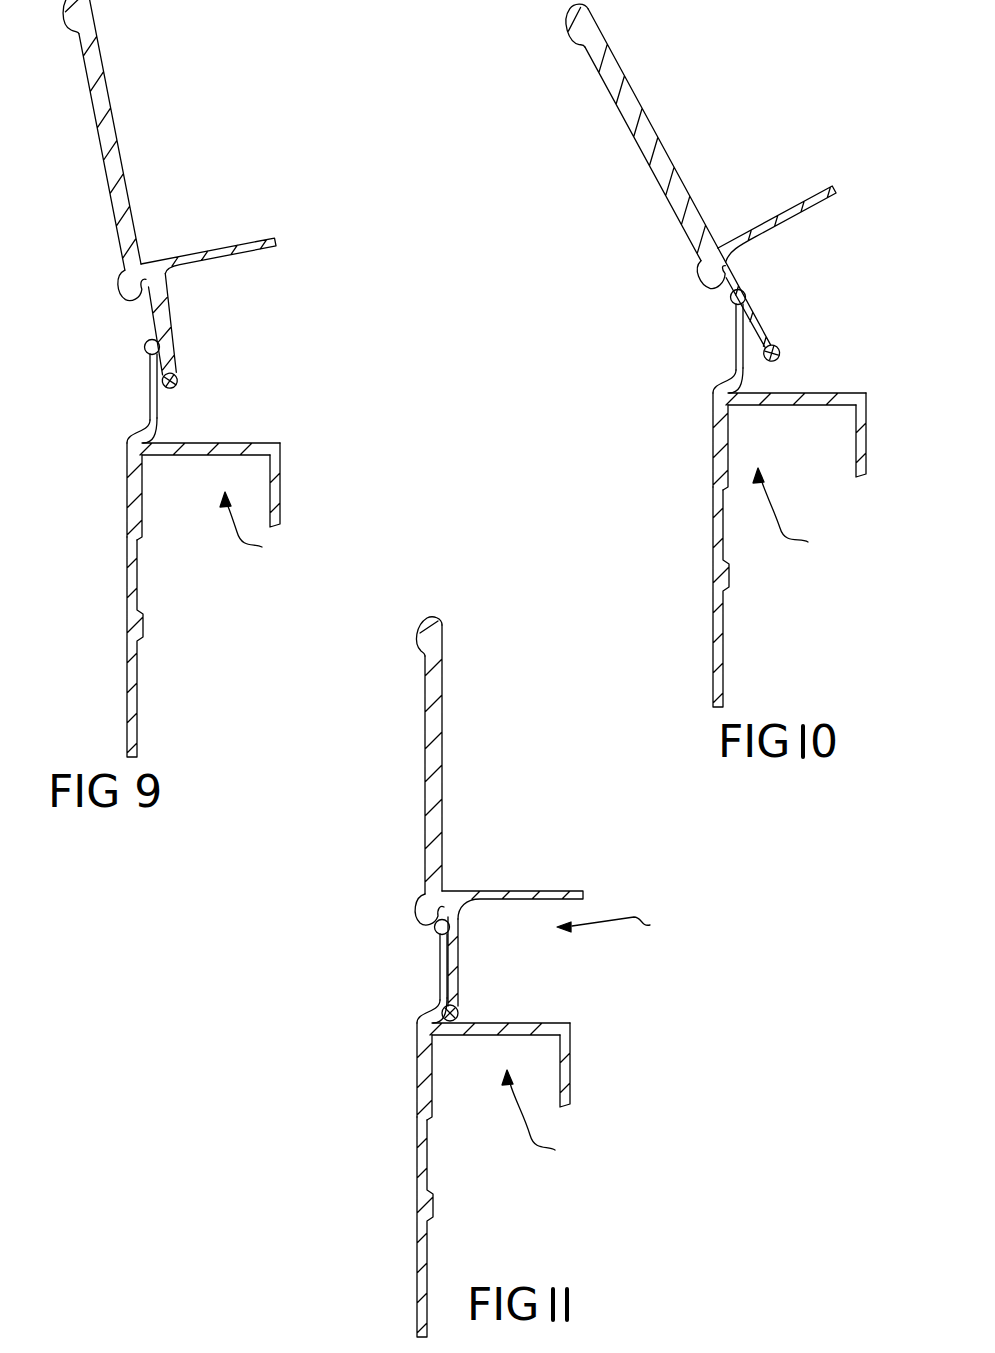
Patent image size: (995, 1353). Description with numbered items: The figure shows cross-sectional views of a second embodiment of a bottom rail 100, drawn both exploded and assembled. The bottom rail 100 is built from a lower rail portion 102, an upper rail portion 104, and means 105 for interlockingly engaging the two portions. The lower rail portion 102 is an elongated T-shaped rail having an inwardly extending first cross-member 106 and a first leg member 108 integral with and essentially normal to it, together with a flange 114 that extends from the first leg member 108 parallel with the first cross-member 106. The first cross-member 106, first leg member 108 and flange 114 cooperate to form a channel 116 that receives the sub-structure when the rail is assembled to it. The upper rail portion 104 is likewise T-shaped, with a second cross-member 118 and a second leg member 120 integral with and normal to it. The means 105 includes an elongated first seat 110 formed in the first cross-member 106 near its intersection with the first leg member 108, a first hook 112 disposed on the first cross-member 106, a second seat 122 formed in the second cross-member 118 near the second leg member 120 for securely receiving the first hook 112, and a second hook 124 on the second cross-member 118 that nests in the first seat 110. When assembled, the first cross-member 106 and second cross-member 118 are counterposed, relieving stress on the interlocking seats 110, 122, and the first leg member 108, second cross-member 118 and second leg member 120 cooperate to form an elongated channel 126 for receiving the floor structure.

In FIG. 9, the bottom rail 100 is at (200, 378).
In FIG. 10, the bottom rail 100 is at (706, 353).
In FIG. 11, the bottom rail 100 is at (470, 977).
In FIG. 9, the lower rail portion 102 is at (127, 660).
In FIG. 10, the lower rail portion 102 is at (728, 600).
In FIG. 11, the lower rail portion 102 is at (417, 1166).
In FIG. 9, the upper rail portion 104 is at (99, 136).
In FIG. 10, the upper rail portion 104 is at (634, 130).
In FIG. 11, the upper rail portion 104 is at (442, 709).
In FIG. 11, the means for interlockingly engaging 105 is at (491, 952).
In FIG. 9, the first cross-member 106 is at (127, 527).
In FIG. 10, the first cross-member 106 is at (713, 483).
In FIG. 11, the first cross-member 106 is at (417, 1262).
In FIG. 9, the first leg member 108 is at (262, 443).
In FIG. 10, the first leg member 108 is at (797, 407).
In FIG. 11, the first leg member 108 is at (552, 1022).
In FIG. 9, the first seat 110 is at (151, 438).
In FIG. 10, the first seat 110 is at (737, 384).
In FIG. 11, the first seat 110 is at (428, 1006).
In FIG. 9, the first hook 112 is at (143, 346).
In FIG. 10, the first hook 112 is at (731, 298).
In FIG. 11, the first hook 112 is at (432, 932).
In FIG. 9, the flange 114 is at (281, 460).
In FIG. 10, the flange 114 is at (866, 430).
In FIG. 11, the flange 114 is at (572, 1065).
In FIG. 9, the channel 116 is at (257, 554).
In FIG. 10, the channel 116 is at (792, 548).
In FIG. 11, the channel 116 is at (547, 1163).
In FIG. 9, the second cross-member 118 is at (97, 40).
In FIG. 10, the second cross-member 118 is at (600, 36).
In FIG. 11, the second cross-member 118 is at (442, 643).
In FIG. 9, the second leg member 120 is at (238, 244).
In FIG. 10, the second leg member 120 is at (806, 196).
In FIG. 11, the second leg member 120 is at (537, 891).
In FIG. 9, the second seat 122 is at (140, 293).
In FIG. 10, the second seat 122 is at (722, 283).
In FIG. 11, the second seat 122 is at (419, 897).
In FIG. 9, the second hook 124 is at (180, 374).
In FIG. 10, the second hook 124 is at (784, 358).
In FIG. 11, the second hook 124 is at (461, 1000).
In FIG. 11, the channel 126 is at (655, 914).